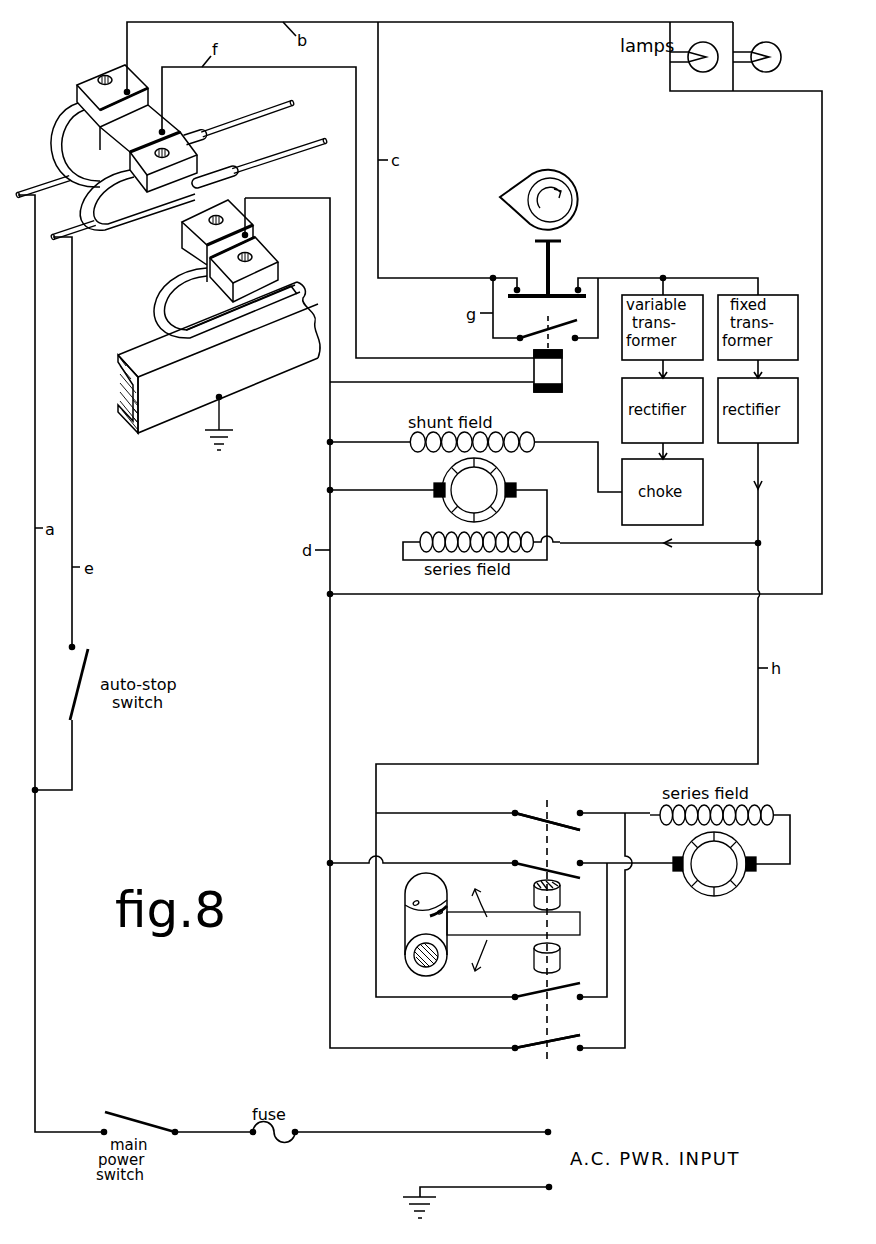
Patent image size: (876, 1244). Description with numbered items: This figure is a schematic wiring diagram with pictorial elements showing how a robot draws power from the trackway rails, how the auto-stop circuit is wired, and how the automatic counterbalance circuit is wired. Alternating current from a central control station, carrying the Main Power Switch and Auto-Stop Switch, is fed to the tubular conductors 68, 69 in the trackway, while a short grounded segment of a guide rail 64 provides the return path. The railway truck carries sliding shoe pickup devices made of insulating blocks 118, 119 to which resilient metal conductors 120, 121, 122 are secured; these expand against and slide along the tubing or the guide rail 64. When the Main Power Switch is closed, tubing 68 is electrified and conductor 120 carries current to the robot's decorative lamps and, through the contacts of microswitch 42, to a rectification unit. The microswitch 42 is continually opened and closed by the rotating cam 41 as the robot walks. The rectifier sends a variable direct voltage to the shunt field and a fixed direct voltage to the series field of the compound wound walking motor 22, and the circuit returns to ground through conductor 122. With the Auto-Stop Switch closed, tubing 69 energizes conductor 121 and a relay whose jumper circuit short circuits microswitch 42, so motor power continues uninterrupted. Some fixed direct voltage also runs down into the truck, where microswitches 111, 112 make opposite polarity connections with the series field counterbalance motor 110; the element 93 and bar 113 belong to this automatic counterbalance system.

The walking mechanism motor 22 is at (438, 492).
The rotating cam 41 is at (500, 198).
The microswitch 42 is at (560, 270).
The guide rail 64 is at (219, 366).
The tubular conductor 68 is at (238, 122).
The tubular conductor 69 is at (301, 153).
The counterbalance system element 93 is at (432, 887).
The series field counterbalance motor 110 is at (717, 864).
The microswitch 111 is at (521, 831).
The microswitch 112 is at (520, 1031).
The counterbalance system element 113 is at (513, 926).
The insulating block 118 is at (93, 85).
The insulating block 119 is at (181, 248).
The resilient metal conductor 120 is at (70, 137).
The resilient metal conductor 121 is at (88, 200).
The resilient metal conductor 122 is at (170, 304).